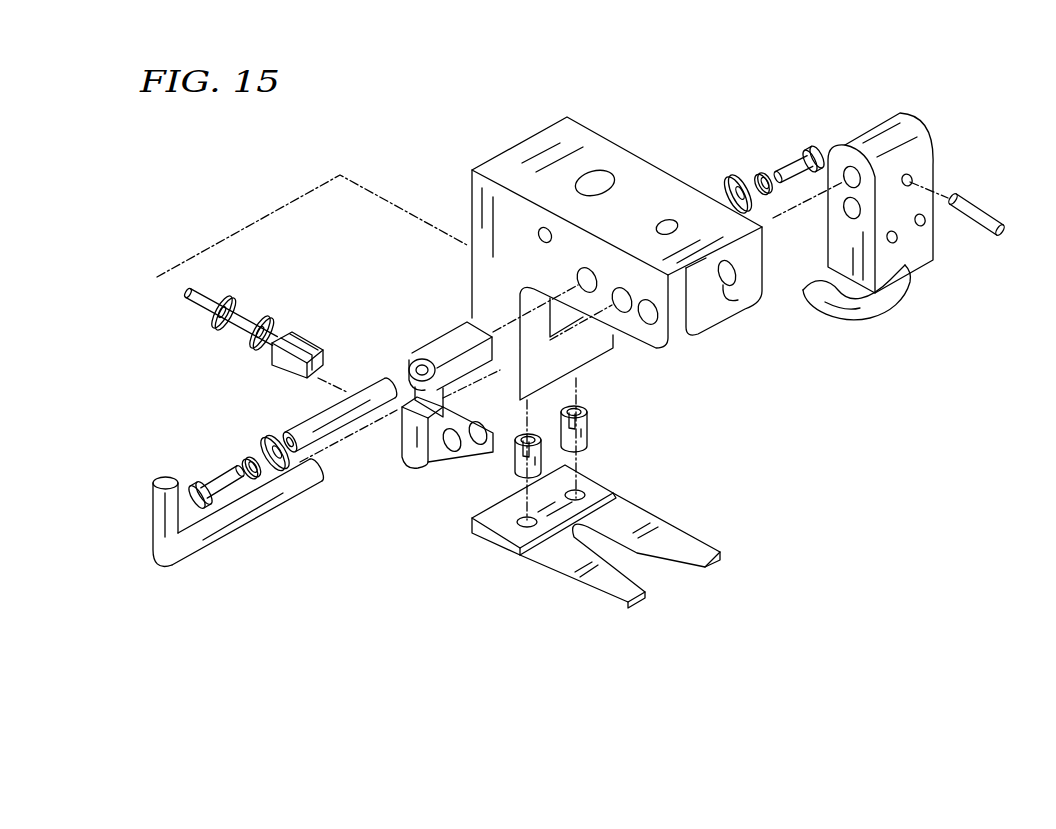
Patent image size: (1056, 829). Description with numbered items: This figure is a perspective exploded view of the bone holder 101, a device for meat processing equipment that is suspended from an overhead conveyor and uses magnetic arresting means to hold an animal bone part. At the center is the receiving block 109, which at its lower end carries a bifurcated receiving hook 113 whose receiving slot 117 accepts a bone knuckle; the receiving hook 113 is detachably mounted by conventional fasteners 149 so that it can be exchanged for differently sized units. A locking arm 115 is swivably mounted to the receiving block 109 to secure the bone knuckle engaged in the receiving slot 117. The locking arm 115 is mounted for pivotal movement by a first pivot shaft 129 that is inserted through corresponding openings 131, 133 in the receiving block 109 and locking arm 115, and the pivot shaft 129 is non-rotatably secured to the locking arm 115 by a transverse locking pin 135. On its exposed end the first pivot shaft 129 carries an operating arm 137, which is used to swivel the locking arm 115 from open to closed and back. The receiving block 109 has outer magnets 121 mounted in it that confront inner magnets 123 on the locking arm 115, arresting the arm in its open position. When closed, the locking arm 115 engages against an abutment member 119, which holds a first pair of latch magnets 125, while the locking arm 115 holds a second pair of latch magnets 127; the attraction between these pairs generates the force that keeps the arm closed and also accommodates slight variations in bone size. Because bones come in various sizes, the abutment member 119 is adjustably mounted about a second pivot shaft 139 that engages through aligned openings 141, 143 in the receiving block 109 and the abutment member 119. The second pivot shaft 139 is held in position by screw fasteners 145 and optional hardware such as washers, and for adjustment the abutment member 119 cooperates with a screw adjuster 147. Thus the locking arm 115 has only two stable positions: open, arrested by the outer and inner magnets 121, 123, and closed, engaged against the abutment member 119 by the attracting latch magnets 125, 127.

The bone holder 101 is at (748, 80).
The receiving block 109 is at (645, 182).
The bifurcated receiving hook 113 is at (555, 558).
The locking arm 115 is at (902, 137).
The receiving slot 117 is at (658, 577).
The abutment member 119 is at (408, 460).
The outer magnets 121 is at (649, 325).
The inner magnets 123 is at (846, 212).
The first pair of latch magnets 125 is at (478, 445).
The second pair of latch magnets 127 is at (896, 242).
The first pivot shaft 129 is at (242, 530).
The opening 131 is at (622, 313).
The opening 133 is at (848, 170).
The transverse locking pin 135 is at (982, 205).
The operating arm 137 is at (152, 513).
The second pivot shaft 139 is at (312, 418).
The opening 141 is at (580, 280).
The opening 143 is at (408, 368).
The screw fasteners 145 is at (786, 160).
The screw adjuster 147 is at (240, 303).
The fasteners 149 is at (542, 458).